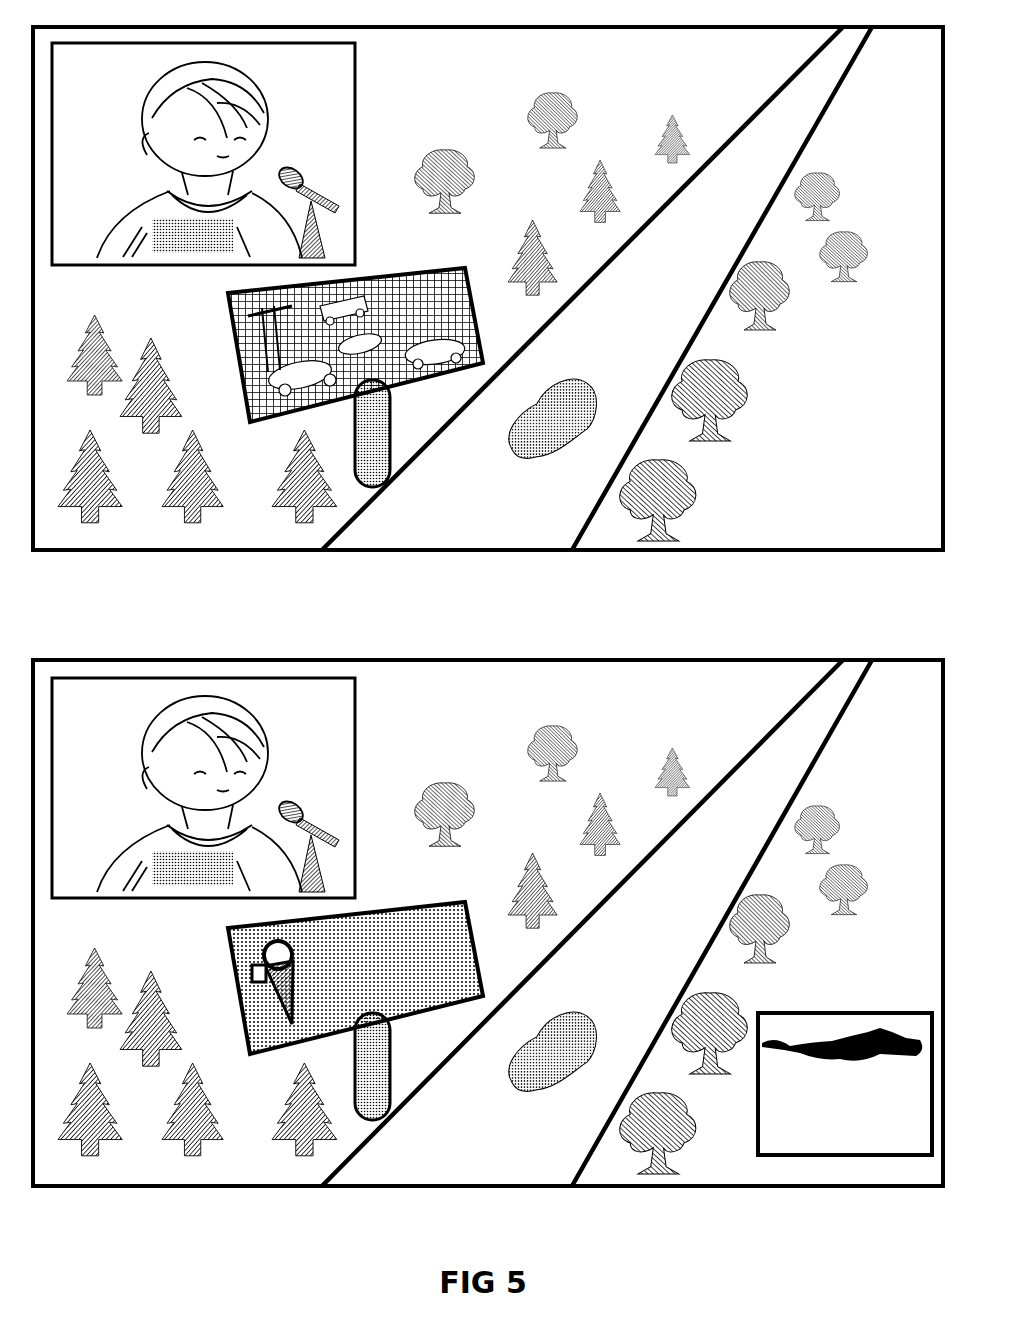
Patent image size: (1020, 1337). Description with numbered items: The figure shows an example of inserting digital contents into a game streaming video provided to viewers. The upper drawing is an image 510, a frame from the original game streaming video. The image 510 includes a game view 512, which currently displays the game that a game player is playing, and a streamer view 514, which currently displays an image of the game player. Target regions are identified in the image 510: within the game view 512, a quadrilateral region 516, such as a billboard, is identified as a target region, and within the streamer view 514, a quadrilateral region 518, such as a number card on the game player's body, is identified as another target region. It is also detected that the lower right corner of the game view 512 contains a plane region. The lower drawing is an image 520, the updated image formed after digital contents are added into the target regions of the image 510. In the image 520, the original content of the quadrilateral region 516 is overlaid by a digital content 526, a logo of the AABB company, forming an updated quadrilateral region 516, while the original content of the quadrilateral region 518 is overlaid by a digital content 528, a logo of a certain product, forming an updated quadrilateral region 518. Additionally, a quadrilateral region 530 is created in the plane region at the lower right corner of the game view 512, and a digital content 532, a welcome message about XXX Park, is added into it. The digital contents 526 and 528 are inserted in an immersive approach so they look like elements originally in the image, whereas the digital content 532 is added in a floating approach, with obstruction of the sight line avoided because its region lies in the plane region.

The image 510 is at (488, 315).
The game view 512 is at (753, 27).
The streamer view 514 is at (266, 43).
The quadrilateral region 516 is at (381, 279).
The quadrilateral region 518 is at (163, 218).
The image 520 is at (488, 944).
The digital content 526 is at (431, 922).
The digital content 528 is at (163, 858).
The quadrilateral region 530 is at (860, 1013).
The digital content 532 is at (775, 1103).